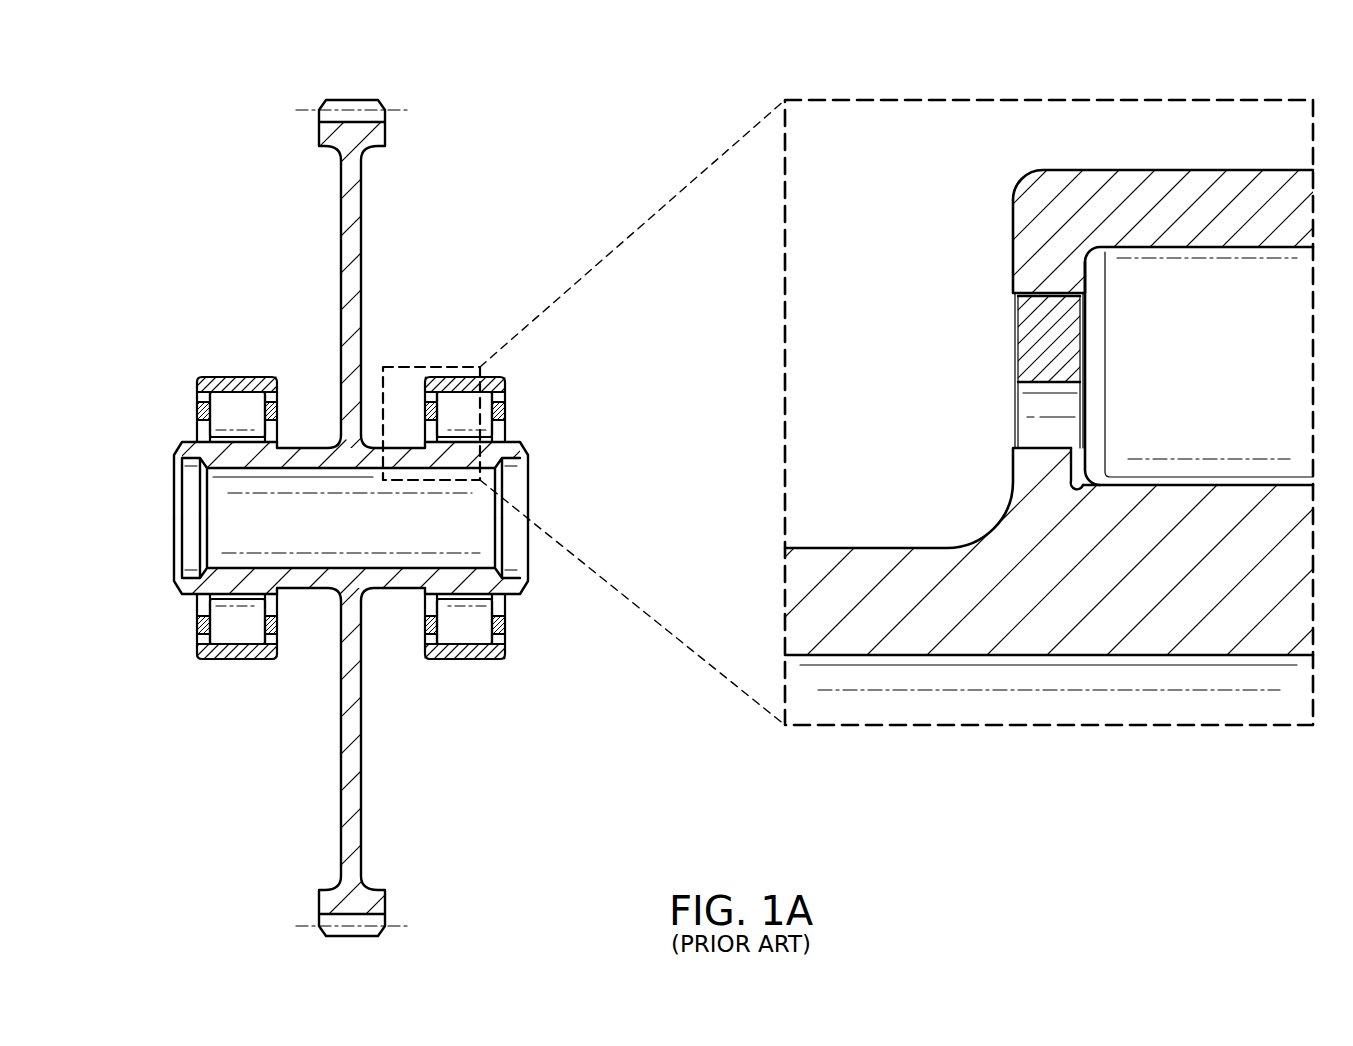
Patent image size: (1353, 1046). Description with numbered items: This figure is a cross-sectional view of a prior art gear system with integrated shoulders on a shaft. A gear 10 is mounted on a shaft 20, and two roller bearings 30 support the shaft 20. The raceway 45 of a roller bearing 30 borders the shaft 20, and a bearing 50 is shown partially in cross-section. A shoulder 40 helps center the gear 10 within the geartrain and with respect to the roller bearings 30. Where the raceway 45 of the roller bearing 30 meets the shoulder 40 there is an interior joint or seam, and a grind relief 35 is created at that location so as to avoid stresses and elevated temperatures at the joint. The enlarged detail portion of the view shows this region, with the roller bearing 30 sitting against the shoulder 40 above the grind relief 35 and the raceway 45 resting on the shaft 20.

The gear 10 is at (350, 98).
The shaft 20 is at (184, 442).
The roller bearing 30 is at (1208, 170).
The grind relief 35 is at (1073, 490).
The shoulder 40 is at (1018, 440).
The raceway 45 is at (1213, 484).
The bearing 50 is at (1027, 347).